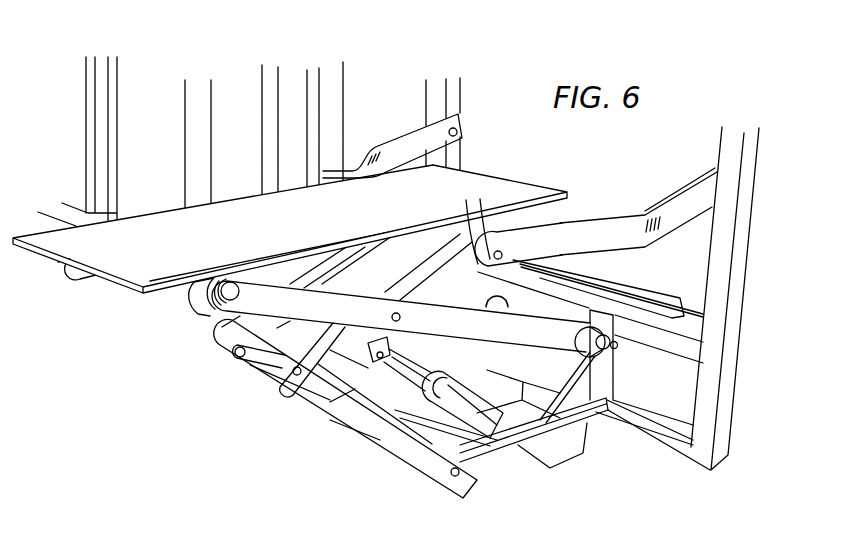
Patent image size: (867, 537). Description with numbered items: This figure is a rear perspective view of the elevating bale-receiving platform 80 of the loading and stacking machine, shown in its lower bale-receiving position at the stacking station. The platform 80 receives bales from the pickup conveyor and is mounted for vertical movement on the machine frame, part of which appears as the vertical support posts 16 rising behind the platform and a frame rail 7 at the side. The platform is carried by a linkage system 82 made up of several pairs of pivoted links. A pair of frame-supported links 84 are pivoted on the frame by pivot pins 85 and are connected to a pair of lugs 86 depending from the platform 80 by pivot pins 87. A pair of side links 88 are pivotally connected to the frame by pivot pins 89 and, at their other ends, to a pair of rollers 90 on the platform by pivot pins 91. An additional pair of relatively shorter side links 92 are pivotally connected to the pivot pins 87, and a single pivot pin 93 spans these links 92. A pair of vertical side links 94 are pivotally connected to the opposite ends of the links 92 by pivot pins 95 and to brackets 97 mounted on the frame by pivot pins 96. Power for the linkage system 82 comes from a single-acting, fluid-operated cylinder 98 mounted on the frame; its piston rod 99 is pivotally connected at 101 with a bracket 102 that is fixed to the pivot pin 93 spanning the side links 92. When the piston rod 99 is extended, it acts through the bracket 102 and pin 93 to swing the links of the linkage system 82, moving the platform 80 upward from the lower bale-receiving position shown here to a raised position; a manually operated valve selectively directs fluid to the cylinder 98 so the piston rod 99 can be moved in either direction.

The vertical support posts 16 is at (192, 166).
The frame rail 7 is at (426, 331).
The bale-receiving platform 80 is at (117, 303).
The linkage system 82 is at (323, 456).
The frame-supported links 84 is at (598, 238).
The pivot pins 85 is at (458, 132).
The lugs 86 is at (489, 225).
The pivot pins 87 is at (503, 256).
The side links 88 is at (316, 300).
The pivot pins 89 is at (617, 350).
The rollers 90 is at (194, 307).
The pivot pins 91 is at (236, 294).
The shorter side links 92 is at (451, 254).
The pivot pin 93 is at (398, 319).
The vertical side links 94 is at (378, 433).
The pivot pins 95 is at (301, 373).
The pivot pins 96 is at (455, 478).
The brackets 97 is at (556, 458).
The cylinder 98 is at (449, 388).
The piston rod 99 is at (392, 361).
The pivotal connection 101 is at (336, 407).
The bracket 102 is at (328, 401).